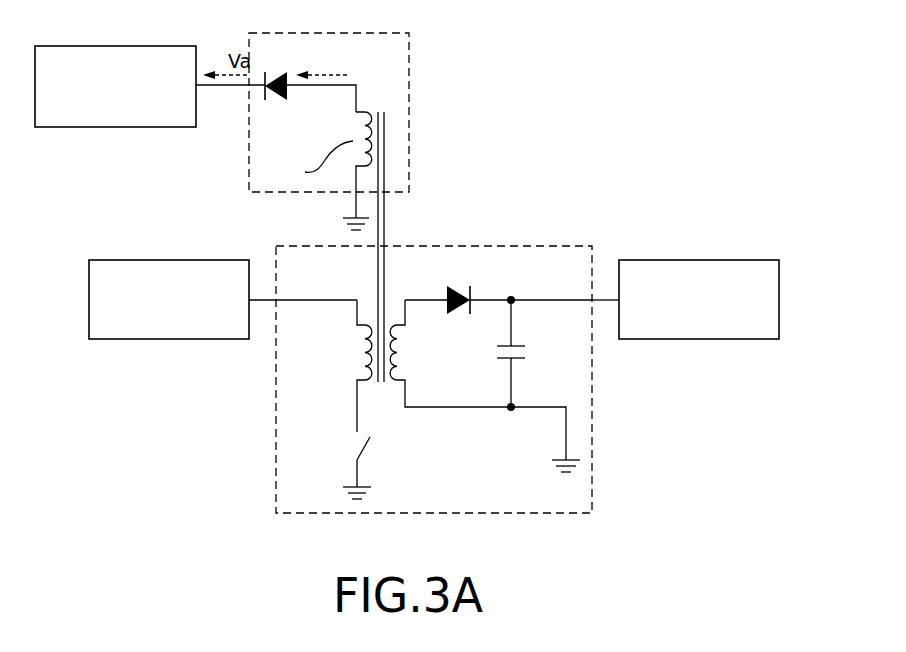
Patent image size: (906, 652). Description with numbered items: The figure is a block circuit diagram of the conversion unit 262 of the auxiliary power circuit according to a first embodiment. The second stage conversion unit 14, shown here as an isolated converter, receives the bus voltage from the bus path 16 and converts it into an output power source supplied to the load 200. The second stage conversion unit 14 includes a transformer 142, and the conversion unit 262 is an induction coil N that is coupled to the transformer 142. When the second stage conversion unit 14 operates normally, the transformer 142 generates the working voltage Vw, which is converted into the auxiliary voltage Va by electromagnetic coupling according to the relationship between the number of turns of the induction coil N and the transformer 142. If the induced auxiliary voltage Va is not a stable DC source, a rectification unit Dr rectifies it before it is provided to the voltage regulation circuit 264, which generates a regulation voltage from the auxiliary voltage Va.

The voltage regulation circuit 264 is at (115, 50).
The conversion unit 262 is at (328, 40).
The bus path 16 is at (169, 263).
The load 200 is at (699, 265).
The second stage conversion unit 14 is at (434, 363).
The transformer 142 is at (380, 388).